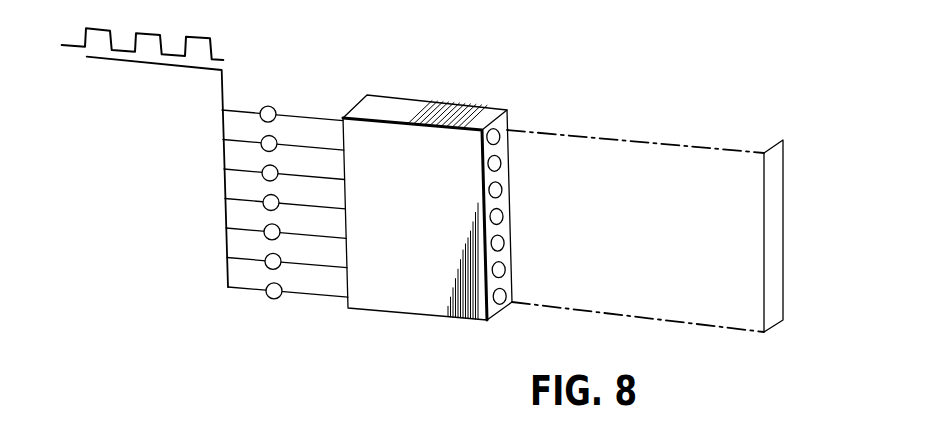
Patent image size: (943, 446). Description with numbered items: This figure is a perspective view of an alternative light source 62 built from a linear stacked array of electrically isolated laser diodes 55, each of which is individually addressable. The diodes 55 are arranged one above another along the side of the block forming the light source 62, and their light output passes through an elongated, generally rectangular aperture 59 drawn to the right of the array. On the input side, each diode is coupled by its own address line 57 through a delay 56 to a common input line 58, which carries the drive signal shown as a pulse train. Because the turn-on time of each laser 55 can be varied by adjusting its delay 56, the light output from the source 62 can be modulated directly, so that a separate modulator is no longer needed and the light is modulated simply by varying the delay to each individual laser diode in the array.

The laser diodes 55 is at (502, 160).
The delay 56 is at (268, 106).
The address line 57 is at (311, 268).
The input line 58 is at (165, 68).
The aperture 59 is at (778, 217).
The light source 62 is at (408, 102).